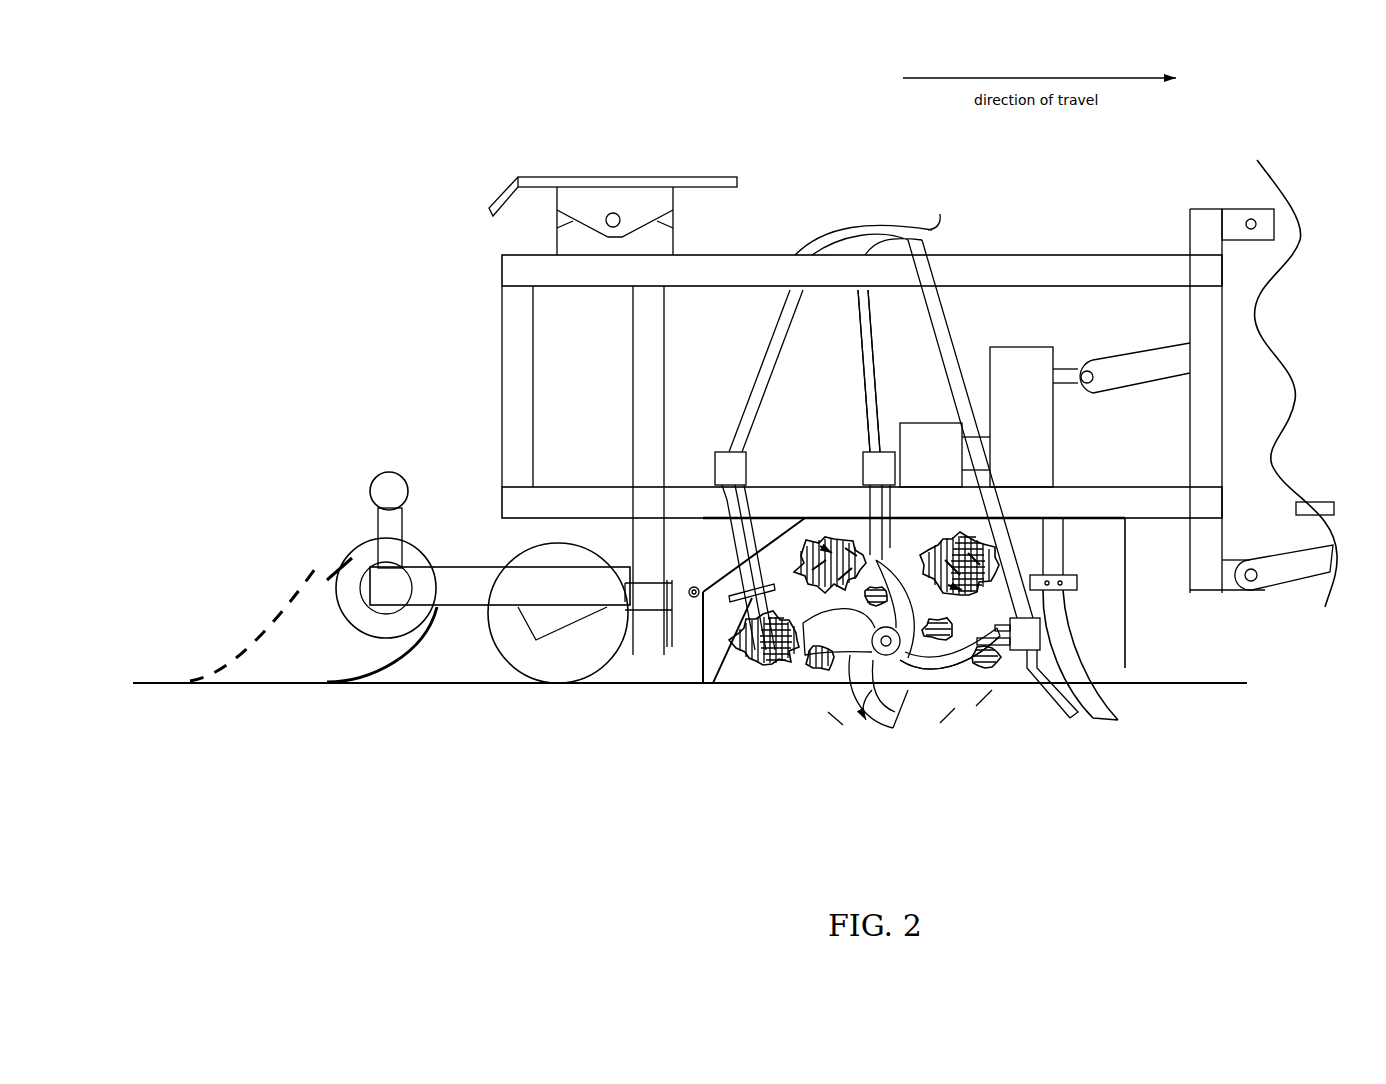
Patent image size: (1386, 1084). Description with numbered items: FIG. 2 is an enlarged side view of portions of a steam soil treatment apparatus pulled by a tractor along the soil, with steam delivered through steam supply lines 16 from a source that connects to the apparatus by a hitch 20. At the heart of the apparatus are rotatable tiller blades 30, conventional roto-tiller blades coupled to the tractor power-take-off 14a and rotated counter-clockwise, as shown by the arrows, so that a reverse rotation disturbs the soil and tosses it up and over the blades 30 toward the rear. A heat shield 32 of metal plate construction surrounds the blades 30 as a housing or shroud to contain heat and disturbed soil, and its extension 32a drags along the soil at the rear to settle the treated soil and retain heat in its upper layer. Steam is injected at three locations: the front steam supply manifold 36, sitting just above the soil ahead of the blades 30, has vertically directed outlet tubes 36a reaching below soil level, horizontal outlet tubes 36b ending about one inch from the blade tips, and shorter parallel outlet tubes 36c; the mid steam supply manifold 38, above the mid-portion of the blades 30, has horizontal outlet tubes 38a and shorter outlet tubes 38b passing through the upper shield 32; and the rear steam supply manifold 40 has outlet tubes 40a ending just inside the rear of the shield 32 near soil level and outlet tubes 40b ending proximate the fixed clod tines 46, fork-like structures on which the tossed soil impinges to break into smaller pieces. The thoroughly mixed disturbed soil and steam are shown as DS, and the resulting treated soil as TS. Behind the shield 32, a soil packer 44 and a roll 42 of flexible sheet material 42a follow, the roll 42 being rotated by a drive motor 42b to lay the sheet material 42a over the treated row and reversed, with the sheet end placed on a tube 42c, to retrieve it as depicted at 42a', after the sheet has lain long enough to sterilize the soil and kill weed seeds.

The power-take-off 14a is at (1045, 395).
The steam supply lines 16 is at (940, 336).
The hitch 20 is at (606, 198).
The rotatable tiller blades 30 is at (848, 694).
The heat shield 32 is at (919, 421).
The extension 32a is at (642, 700).
The front steam supply manifold 36 is at (1047, 619).
The steam outlet tubes 36a is at (1088, 702).
The steam outlet tubes 36b is at (1046, 741).
The steam outlet tubes 36c is at (1084, 517).
The mid steam supply manifold 38 is at (879, 506).
The steam outlet tubes 38a is at (950, 717).
The steam outlet tubes 38b is at (826, 394).
The rear steam supply manifold 40 is at (745, 551).
The steam outlet tubes 40a is at (671, 679).
The steam outlet tubes 40b is at (783, 527).
The roll 42 is at (335, 548).
The sheet material 42a is at (305, 644).
The retrieval of the sheet material 42a' is at (242, 619).
The drive motor 42b is at (329, 495).
The tube 42c is at (292, 543).
The soil packer 44 is at (521, 552).
The clod tines 46 is at (730, 708).
The mixture of disturbed soil and steam DS is at (962, 592).
The treated soil TS is at (690, 714).